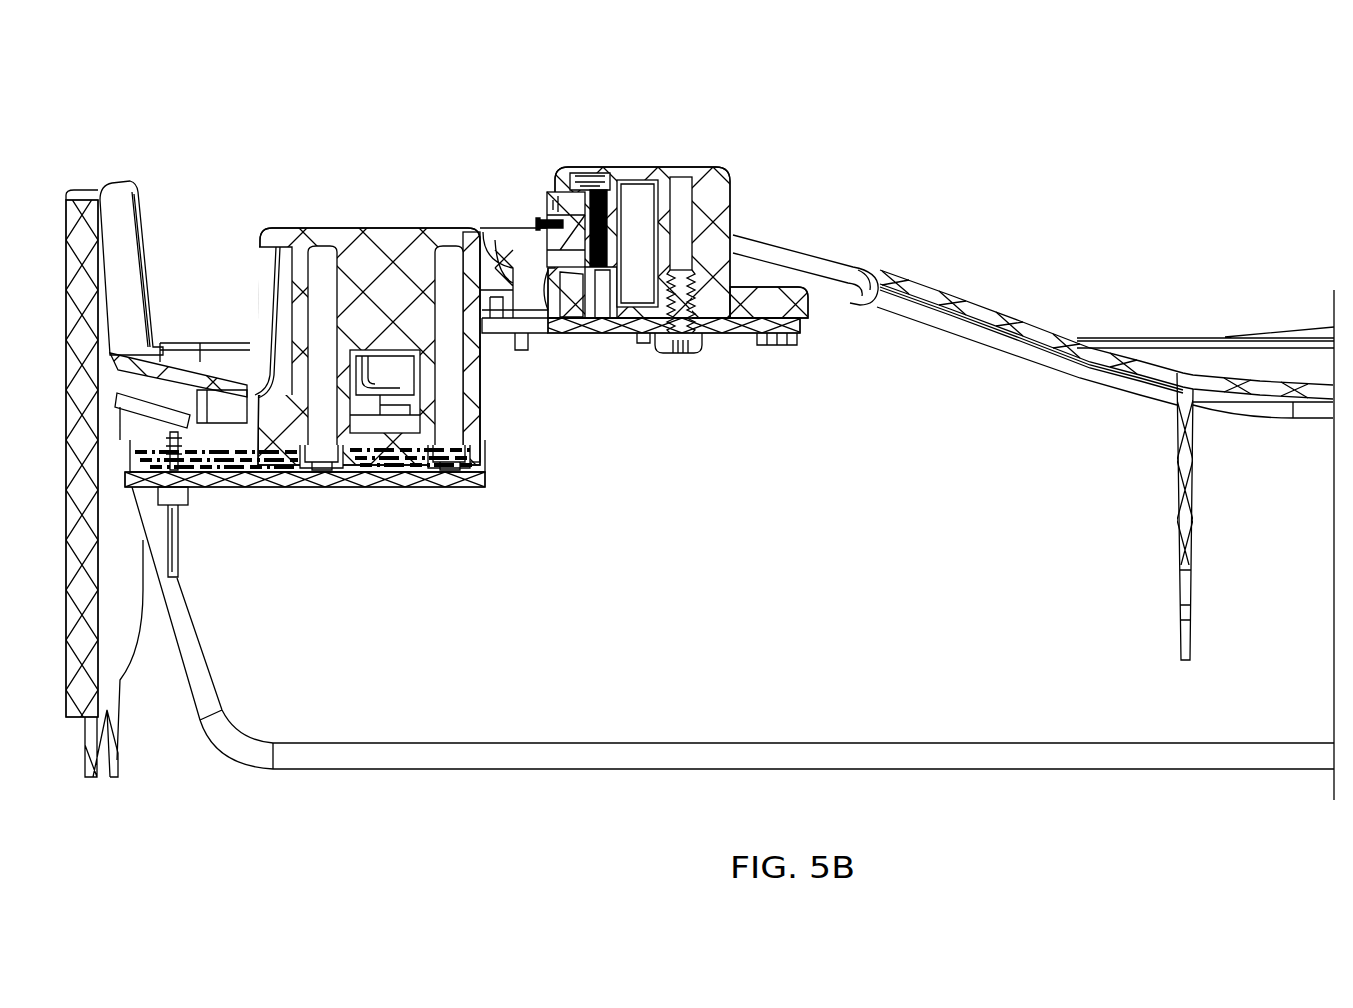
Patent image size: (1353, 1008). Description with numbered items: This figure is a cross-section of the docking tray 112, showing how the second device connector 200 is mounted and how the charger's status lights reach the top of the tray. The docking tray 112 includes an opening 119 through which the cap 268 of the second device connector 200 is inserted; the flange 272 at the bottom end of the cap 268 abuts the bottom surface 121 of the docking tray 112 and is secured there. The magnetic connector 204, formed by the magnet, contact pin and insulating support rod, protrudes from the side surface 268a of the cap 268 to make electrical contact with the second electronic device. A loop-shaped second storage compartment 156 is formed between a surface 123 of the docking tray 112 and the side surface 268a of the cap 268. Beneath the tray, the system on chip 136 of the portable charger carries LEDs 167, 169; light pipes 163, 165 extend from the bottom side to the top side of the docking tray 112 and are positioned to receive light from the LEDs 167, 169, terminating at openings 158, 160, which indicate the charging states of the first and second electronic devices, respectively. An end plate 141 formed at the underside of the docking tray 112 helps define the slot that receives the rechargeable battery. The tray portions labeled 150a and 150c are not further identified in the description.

The connector housing block 150a is at (385, 228).
The opening 158 is at (320, 228).
The opening 160 is at (447, 228).
The surface of the docking tray 123 is at (517, 228).
The magnetic connector 204 is at (563, 198).
The cap 268 is at (700, 170).
The second device connector 200 is at (733, 212).
The ramp wall 150c is at (1022, 320).
The side surface of cap 268a is at (575, 325).
The second storage compartment 156 is at (535, 312).
The opening 119 is at (724, 336).
The flange 272 is at (768, 333).
The bottom surface of docking tray 121 is at (843, 318).
The end plate 141 is at (1177, 515).
The light pipe 163 is at (318, 437).
The LED 167 is at (321, 470).
The system on chip (SoC) 136 is at (382, 487).
The LED 169 is at (445, 472).
The light pipe 165 is at (452, 420).
The docking tray 112 is at (1126, 770).